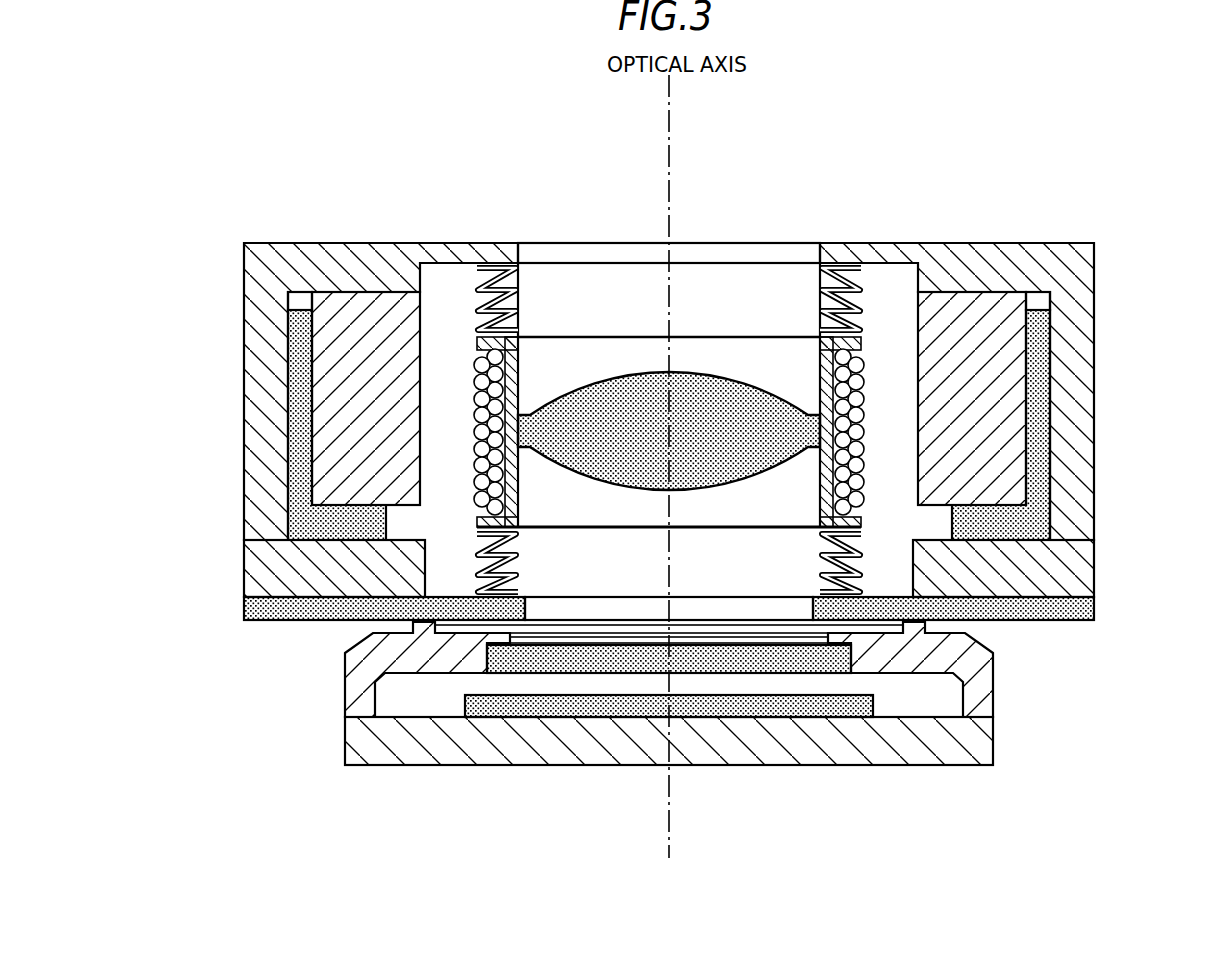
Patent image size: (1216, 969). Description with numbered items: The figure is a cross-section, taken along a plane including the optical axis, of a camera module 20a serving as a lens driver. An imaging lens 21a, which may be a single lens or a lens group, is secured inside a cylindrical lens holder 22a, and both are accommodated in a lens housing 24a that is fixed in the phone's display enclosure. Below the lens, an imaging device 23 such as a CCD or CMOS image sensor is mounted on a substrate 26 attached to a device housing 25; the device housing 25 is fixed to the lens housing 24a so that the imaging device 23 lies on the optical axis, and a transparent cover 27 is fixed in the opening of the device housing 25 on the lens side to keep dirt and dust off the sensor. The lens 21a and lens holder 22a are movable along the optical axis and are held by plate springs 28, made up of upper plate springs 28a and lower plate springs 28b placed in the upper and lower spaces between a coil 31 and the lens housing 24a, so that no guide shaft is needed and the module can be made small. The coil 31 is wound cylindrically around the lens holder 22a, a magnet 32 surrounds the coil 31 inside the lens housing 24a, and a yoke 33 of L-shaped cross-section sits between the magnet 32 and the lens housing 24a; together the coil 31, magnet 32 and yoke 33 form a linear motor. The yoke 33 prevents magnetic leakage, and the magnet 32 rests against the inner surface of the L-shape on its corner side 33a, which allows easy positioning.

The camera module 20a is at (944, 92).
The imaging lens 21a is at (593, 428).
The lens holder 22a is at (755, 362).
The imaging device 23 is at (535, 705).
The lens housing 24a is at (1082, 303).
The device housing 25 is at (990, 688).
The substrate 26 is at (932, 748).
The transparent cover 27 is at (740, 665).
The plate springs 28 is at (844, 375).
The upper plate springs 28a is at (863, 297).
The lower plate springs 28b is at (863, 555).
The coil 31 is at (478, 405).
The magnet 32 is at (347, 303).
The yoke 33 is at (258, 375).
The corner side 33a is at (298, 525).